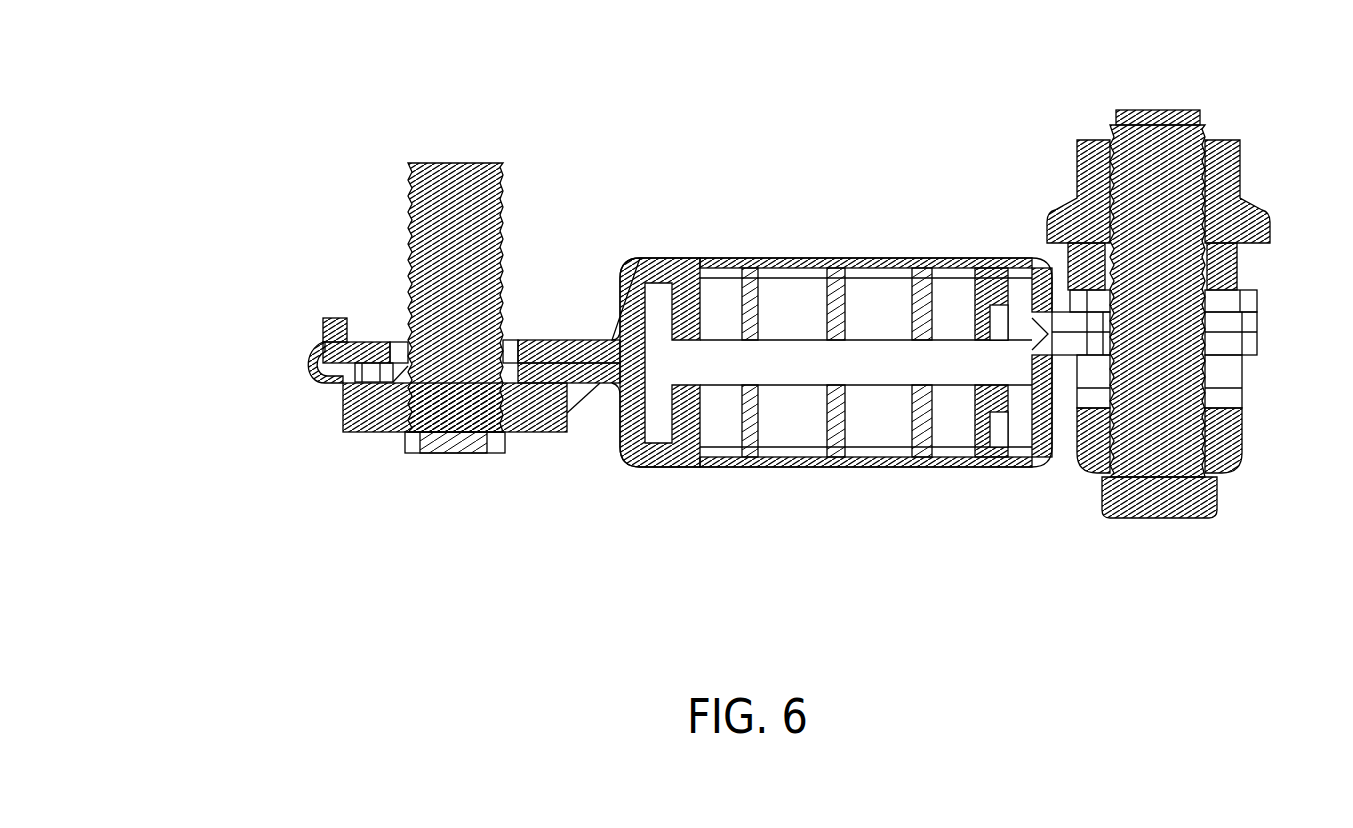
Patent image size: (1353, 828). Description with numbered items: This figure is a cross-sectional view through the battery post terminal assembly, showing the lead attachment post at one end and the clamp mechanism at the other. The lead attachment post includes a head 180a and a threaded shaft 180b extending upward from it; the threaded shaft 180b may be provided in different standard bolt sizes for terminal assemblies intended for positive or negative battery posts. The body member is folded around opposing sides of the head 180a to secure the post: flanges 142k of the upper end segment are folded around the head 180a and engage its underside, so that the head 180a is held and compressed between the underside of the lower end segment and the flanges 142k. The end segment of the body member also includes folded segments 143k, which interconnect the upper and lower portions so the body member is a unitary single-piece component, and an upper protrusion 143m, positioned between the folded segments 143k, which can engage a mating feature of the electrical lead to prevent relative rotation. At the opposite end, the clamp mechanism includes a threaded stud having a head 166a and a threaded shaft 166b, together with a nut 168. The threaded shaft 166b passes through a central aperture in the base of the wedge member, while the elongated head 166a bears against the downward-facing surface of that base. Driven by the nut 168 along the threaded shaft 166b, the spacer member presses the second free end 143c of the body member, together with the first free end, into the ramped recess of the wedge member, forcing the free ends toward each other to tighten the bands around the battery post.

The threaded shaft 180b is at (443, 203).
The head 180a is at (530, 427).
The flanges 142k is at (443, 437).
The upper protrusion 143m is at (323, 320).
The folded segments 143k is at (323, 373).
The nut 168 is at (1092, 158).
The threaded shaft 166b is at (1170, 123).
The head 166a is at (1185, 518).
The second free end 143c is at (1258, 323).